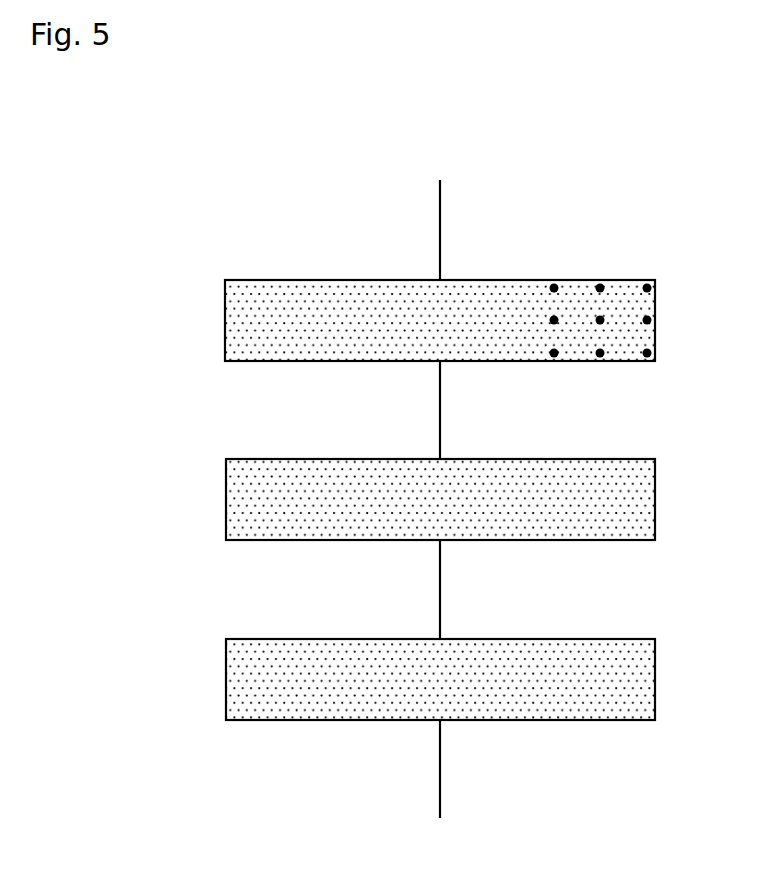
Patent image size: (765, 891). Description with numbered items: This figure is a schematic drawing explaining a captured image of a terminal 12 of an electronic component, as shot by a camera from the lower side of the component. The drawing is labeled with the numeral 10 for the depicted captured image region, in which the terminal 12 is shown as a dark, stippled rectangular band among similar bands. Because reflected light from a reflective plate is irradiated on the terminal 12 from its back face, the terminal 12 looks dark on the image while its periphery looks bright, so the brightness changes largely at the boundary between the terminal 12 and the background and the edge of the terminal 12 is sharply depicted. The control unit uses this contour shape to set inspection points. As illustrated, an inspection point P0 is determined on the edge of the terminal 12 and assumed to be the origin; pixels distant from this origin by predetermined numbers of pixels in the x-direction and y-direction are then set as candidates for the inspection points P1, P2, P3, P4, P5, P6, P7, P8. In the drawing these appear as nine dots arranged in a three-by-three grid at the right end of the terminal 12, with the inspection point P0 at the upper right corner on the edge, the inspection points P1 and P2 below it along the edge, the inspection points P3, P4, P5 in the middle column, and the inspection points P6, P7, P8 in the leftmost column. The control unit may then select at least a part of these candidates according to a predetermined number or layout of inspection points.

The stacked body / laminate 10 is at (320, 182).
The terminal 12 is at (490, 280).
The inspection point P0 is at (647, 286).
The inspection point P1 is at (649, 321).
The inspection point P2 is at (647, 357).
The inspection point P3 is at (600, 287).
The inspection point P4 is at (599, 323).
The inspection point P5 is at (600, 357).
The inspection point P6 is at (553, 287).
The inspection point P7 is at (553, 322).
The inspection point P8 is at (554, 356).